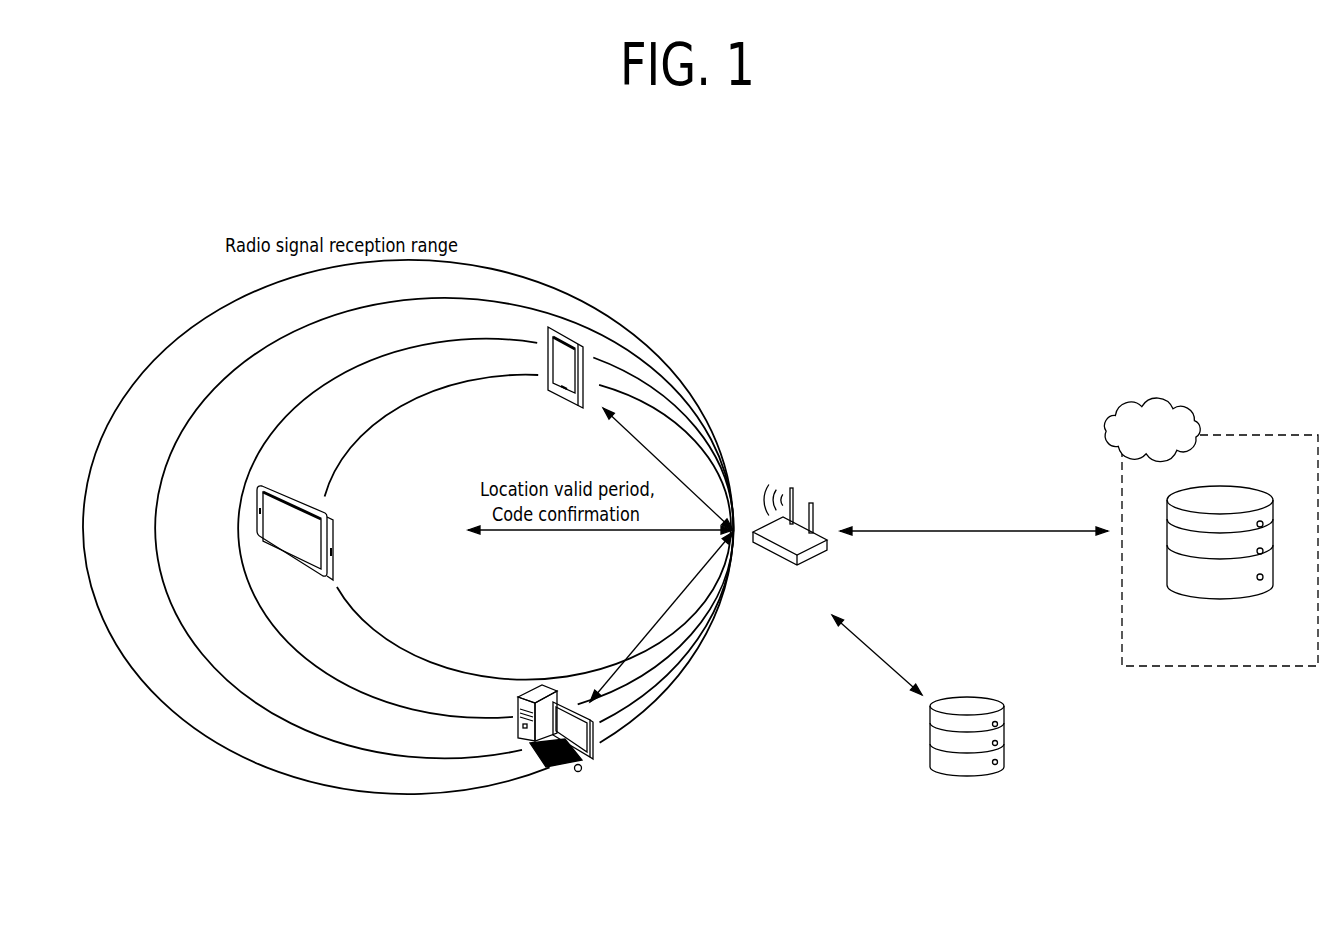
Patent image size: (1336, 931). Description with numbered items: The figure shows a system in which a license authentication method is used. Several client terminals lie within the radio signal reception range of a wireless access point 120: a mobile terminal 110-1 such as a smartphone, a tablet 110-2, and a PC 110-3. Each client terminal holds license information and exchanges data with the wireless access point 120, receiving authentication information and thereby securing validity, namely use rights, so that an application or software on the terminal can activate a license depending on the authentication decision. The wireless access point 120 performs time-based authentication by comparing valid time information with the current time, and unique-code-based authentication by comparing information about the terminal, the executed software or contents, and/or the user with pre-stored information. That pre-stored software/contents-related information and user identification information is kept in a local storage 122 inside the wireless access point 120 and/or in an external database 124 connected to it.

The mobile terminal 110-1 is at (568, 337).
The tablet 110-2 is at (328, 510).
The PC 110-3 is at (568, 700).
The wireless access point 120 is at (792, 489).
The local storage 122 is at (1005, 735).
The external database 124 is at (1252, 434).